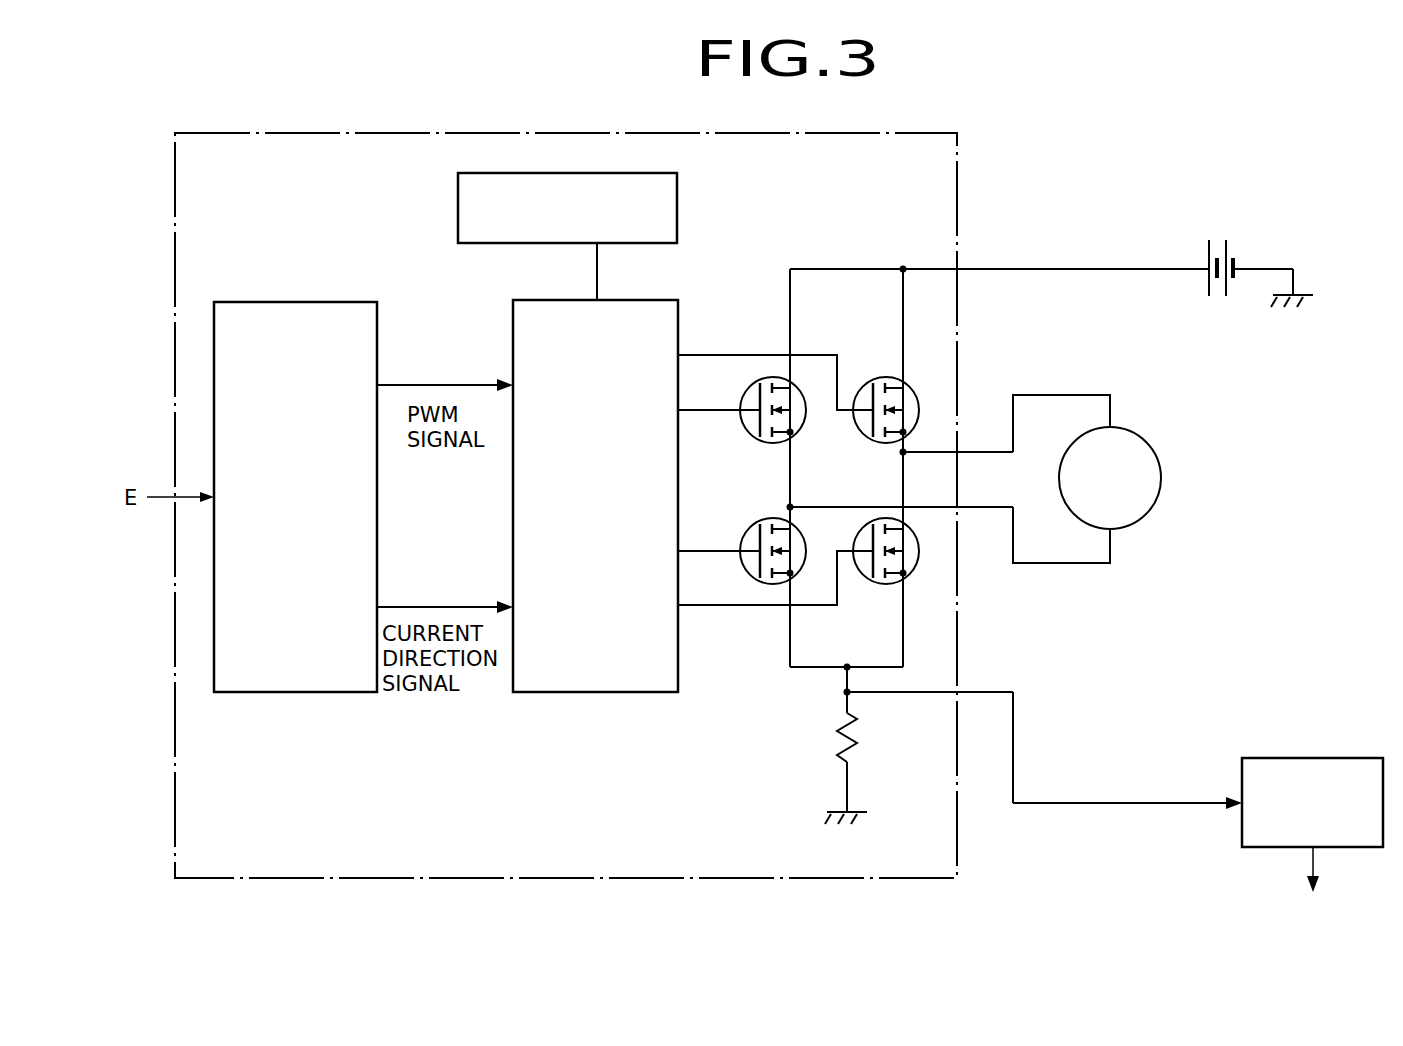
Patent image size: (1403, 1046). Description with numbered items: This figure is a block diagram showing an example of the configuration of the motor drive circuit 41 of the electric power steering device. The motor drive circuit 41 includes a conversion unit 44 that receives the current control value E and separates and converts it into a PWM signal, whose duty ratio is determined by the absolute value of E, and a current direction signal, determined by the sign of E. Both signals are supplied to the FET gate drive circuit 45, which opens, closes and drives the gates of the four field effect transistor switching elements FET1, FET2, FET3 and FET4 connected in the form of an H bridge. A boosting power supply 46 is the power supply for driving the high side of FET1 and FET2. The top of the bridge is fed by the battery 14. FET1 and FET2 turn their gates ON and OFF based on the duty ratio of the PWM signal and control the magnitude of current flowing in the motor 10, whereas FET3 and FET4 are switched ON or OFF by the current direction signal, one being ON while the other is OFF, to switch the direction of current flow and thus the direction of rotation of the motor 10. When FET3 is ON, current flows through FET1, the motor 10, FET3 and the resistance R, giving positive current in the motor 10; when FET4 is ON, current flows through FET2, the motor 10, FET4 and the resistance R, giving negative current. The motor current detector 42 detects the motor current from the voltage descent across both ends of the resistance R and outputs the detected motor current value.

The motor 10 is at (1137, 527).
The battery 14 is at (1237, 252).
The motor drive circuit 41 is at (957, 848).
The motor current detector 42 is at (1352, 757).
The conversion unit 44 is at (322, 300).
The FET gate drive circuit 45 is at (680, 326).
The boosting power supply 46 is at (458, 183).
The resistance R is at (866, 733).
The FET 1 FET1 is at (872, 440).
The FET 2 FET2 is at (767, 447).
The FET 3 FET3 is at (756, 523).
The FET 4 FET4 is at (877, 585).